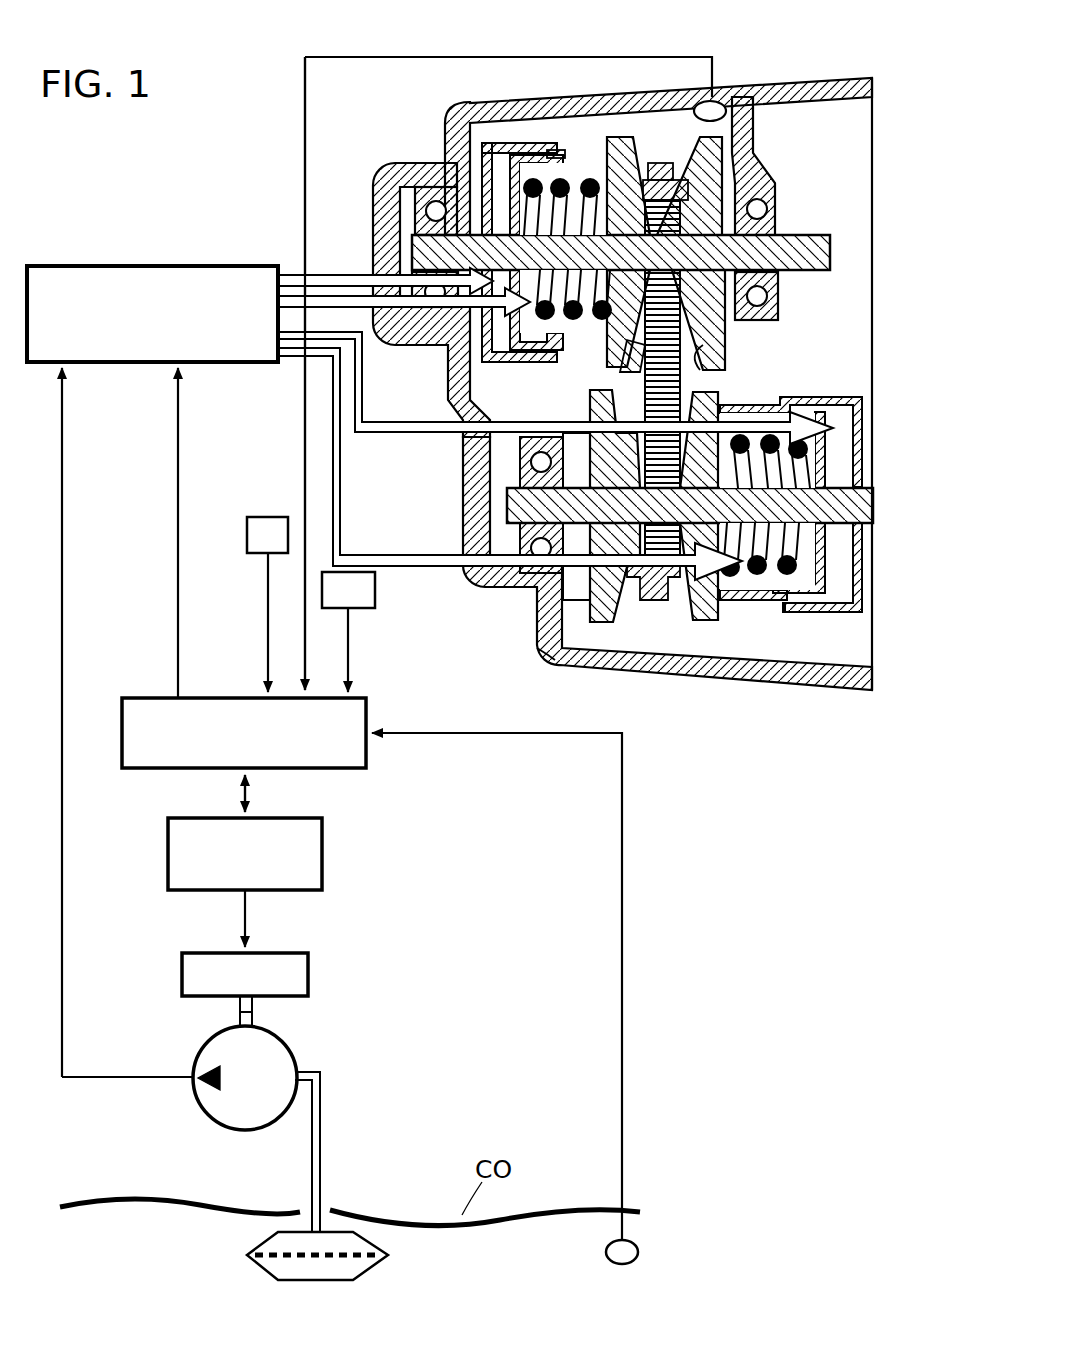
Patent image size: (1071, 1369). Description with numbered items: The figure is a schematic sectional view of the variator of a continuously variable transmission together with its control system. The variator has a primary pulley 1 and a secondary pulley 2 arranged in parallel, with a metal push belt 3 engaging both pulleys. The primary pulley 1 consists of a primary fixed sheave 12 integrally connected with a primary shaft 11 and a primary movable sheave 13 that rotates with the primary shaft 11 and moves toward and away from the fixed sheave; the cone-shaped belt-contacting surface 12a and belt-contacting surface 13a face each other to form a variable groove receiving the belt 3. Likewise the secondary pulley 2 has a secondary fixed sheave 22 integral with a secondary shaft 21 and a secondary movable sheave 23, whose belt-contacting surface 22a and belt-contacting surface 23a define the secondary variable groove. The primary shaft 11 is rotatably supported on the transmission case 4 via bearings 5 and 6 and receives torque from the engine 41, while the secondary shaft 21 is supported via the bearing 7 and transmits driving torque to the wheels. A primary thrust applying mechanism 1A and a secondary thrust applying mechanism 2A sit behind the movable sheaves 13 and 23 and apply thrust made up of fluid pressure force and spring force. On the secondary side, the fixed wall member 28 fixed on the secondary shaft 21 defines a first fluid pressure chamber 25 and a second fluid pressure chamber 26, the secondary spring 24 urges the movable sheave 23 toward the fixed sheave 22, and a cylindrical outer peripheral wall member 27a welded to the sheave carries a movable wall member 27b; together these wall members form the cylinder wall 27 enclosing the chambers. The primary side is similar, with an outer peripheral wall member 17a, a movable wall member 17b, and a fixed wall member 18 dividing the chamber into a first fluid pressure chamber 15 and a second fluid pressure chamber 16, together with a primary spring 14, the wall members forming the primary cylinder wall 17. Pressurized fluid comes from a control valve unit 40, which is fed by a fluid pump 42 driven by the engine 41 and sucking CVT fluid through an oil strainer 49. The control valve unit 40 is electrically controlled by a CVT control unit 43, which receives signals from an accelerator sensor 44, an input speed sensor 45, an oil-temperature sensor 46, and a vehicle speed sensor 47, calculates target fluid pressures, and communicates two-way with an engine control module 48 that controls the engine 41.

The primary pulley 1 is at (635, 222).
The primary thrust applying mechanism 1A is at (556, 150).
The secondary pulley 2 is at (658, 562).
The secondary thrust applying mechanism 2A is at (733, 625).
The metal push belt 3 is at (613, 660).
The transmission case 4 is at (445, 130).
The bearing 5 is at (436, 211).
The bearing 6 is at (760, 208).
The bearing 7 is at (528, 588).
The primary shaft 11 is at (806, 267).
The primary fixed sheave 12 is at (712, 328).
The belt-contacting surface 12a is at (700, 358).
The primary movable sheave 13 is at (617, 333).
The belt-contacting surface 13a is at (632, 373).
The primary spring 14 is at (562, 124).
The first fluid pressure chamber 15 is at (575, 172).
The second fluid pressure chamber 16 is at (507, 187).
The cylinder wall 17 is at (503, 165).
The outer peripheral wall member 17a is at (598, 140).
The movable wall member 17b is at (480, 175).
The fixed wall member 18 is at (486, 168).
The secondary shaft 21 is at (540, 508).
The secondary fixed sheave 22 is at (610, 598).
The belt-contacting surface 22a is at (542, 652).
The secondary movable sheave 23 is at (707, 595).
The belt-contacting surface 23a is at (656, 620).
The secondary spring 24 is at (780, 600).
The first fluid pressure chamber 25 is at (748, 578).
The second fluid pressure chamber 26 is at (858, 605).
The cylinder wall 27 is at (808, 403).
The outer peripheral wall member 27a is at (750, 605).
The movable wall member 27b is at (838, 585).
The fixed wall member 28 is at (824, 458).
The control valve unit 40 is at (152, 265).
The engine 41 is at (308, 971).
The fluid pump 42 is at (289, 1040).
The CVT control unit 43 is at (215, 698).
The accelerator sensor 44 is at (268, 517).
The input speed sensor 45 is at (712, 108).
The oil-temperature sensor 46 is at (638, 1252).
The vehicle speed sensor 47 is at (375, 587).
The engine control module 48 is at (322, 850).
The oil strainer 49 is at (366, 1272).